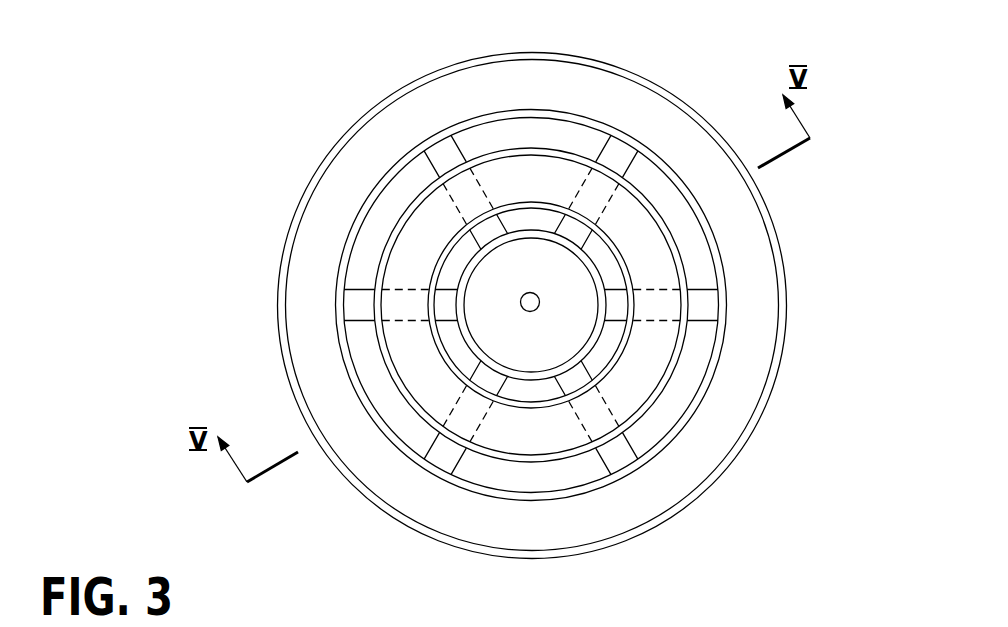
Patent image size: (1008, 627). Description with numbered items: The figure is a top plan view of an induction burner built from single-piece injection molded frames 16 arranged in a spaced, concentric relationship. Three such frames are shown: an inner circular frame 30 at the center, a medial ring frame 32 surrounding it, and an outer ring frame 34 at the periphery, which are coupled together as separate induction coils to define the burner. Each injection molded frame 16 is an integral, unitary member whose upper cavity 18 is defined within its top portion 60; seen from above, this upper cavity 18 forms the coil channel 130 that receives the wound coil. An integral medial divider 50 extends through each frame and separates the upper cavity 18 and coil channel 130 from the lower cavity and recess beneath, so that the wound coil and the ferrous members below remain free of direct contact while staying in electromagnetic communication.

The injection molded frame 16 is at (215, 228).
The upper cavity 18 is at (422, 112).
The inner circular frame 30 is at (458, 270).
The medial ring frame 32 is at (403, 410).
The outer ring frame 34 is at (786, 263).
The integral medial divider 50 is at (335, 183).
The top portion 60 is at (734, 464).
The coil channel 130 is at (727, 399).